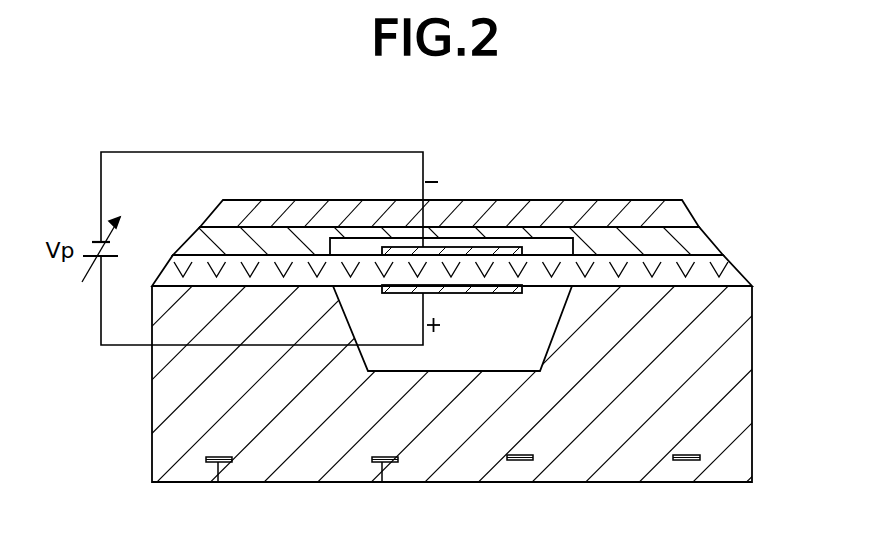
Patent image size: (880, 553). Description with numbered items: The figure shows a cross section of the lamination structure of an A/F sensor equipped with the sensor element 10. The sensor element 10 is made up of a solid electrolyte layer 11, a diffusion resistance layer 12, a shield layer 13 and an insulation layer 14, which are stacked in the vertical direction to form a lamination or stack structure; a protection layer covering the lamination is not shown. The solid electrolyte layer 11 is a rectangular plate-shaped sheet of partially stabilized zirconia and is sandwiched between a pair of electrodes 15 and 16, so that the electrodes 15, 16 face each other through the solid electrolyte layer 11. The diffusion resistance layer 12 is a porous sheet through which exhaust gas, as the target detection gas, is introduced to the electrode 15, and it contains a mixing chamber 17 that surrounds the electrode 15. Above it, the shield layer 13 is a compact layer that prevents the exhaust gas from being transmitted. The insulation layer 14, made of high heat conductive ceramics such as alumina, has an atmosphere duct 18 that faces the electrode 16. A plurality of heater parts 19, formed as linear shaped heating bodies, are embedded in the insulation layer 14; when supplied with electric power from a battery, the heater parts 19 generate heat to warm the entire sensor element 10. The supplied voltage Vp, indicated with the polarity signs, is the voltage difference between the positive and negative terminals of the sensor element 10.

The sensor element 10 is at (699, 157).
The solid electrolyte layer 11 is at (737, 268).
The diffusion resistance layer 12 is at (713, 237).
The shield layer 13 is at (698, 213).
The insulation layer 14 is at (743, 342).
The electrode 15 is at (463, 246).
The electrode 16 is at (503, 285).
The mixing chamber 17 is at (553, 245).
The atmosphere duct 18 is at (458, 360).
The heater parts 19 is at (218, 482).